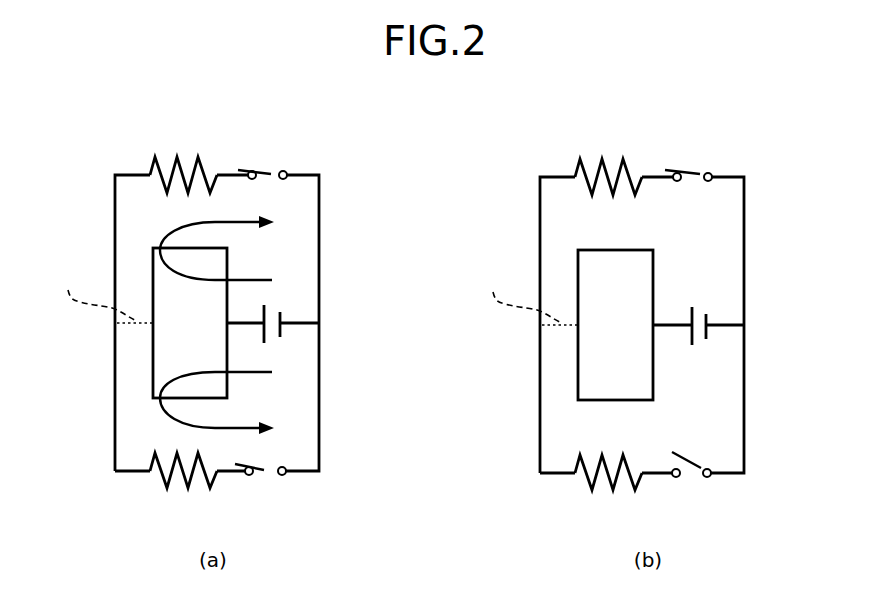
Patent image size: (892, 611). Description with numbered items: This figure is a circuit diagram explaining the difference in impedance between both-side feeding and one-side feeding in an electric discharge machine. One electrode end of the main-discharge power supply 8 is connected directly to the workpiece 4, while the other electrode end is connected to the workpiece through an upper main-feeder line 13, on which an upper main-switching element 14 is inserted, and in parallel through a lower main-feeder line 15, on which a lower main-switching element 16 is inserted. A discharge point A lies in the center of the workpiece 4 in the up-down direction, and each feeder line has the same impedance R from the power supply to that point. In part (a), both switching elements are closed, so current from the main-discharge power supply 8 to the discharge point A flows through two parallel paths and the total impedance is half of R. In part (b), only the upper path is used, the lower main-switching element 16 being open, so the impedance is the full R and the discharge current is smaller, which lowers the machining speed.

The workpiece 4 is at (227, 385).
The main-discharge power supply 8 is at (273, 305).
The upper main-feeder line 13 is at (319, 198).
The upper main-switching element 14 is at (258, 168).
The lower main-feeder line 15 is at (319, 346).
The lower main-switching element 16 is at (260, 474).
The discharge point A is at (319, 294).
The impedance R is at (396, 326).